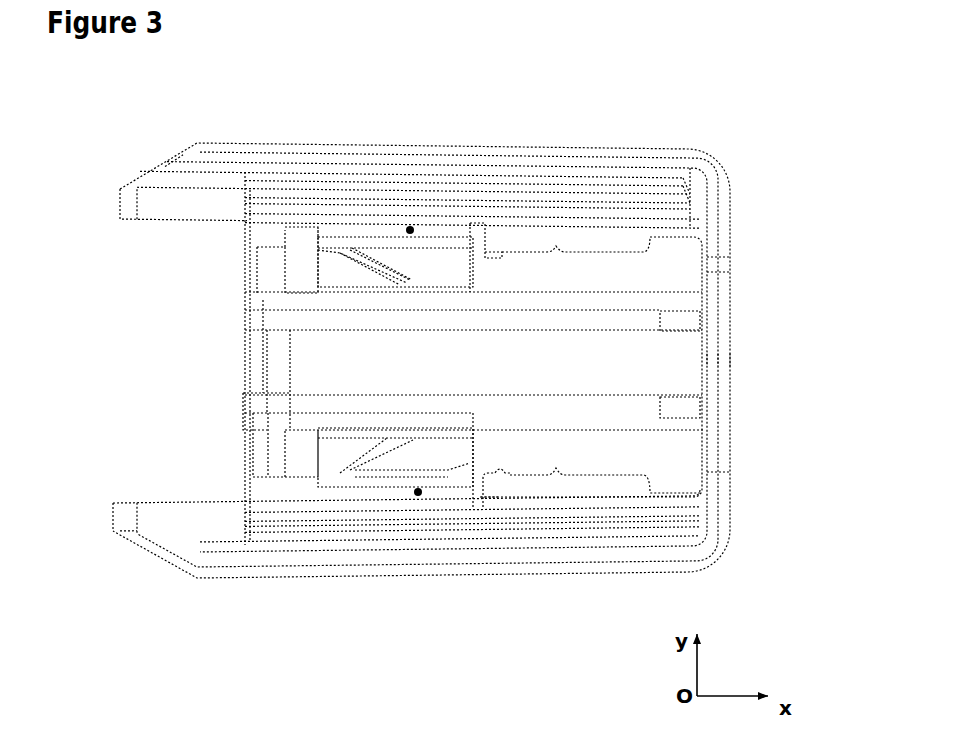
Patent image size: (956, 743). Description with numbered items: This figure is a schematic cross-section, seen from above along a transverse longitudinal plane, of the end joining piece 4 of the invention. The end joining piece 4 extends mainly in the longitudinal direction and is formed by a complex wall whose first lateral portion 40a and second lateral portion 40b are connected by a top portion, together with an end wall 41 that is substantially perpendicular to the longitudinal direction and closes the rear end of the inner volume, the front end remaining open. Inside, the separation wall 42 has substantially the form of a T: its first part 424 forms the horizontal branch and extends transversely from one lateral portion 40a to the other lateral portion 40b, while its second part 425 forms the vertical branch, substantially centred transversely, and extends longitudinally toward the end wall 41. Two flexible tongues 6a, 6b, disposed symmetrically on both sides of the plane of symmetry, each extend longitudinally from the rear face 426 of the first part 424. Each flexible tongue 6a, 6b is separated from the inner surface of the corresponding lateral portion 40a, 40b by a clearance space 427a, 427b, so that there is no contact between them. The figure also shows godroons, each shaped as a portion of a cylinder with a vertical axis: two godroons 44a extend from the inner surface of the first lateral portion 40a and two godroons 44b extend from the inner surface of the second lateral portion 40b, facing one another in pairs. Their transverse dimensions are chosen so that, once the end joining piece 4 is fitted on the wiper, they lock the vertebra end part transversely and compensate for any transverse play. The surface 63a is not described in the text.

The end joining piece 4 is at (207, 634).
The end wall 41 is at (706, 410).
The first lateral portion 40a is at (497, 560).
The second lateral portion 40b is at (330, 163).
The separation wall 42 is at (270, 343).
The first part of the separation wall 424 is at (297, 247).
The second part of the separation wall 425 is at (602, 363).
The rear face 426 is at (322, 252).
The clearance space 427a is at (418, 496).
The clearance space 427b is at (411, 227).
The inclined surface 63a is at (447, 243).
The flexible tongue 6a is at (357, 480).
The flexible tongue 6b is at (440, 260).
The godroons 44a is at (550, 475).
The godroons 44b is at (500, 252).